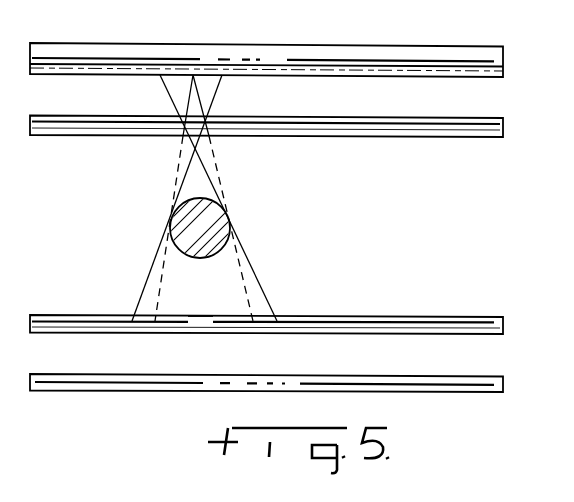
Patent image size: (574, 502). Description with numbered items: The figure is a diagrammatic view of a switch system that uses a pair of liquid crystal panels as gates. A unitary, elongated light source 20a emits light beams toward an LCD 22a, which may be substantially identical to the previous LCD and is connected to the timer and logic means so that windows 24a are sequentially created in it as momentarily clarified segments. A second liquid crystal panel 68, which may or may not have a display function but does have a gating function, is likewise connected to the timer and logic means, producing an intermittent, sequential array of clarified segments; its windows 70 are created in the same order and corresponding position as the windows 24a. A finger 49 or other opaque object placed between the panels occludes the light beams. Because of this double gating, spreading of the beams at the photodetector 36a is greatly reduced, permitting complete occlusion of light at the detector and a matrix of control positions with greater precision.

The light source 20a is at (330, 46).
The LCD 22a is at (362, 133).
The windows 24a is at (208, 113).
The finger 49 is at (227, 211).
The windows 70 is at (201, 321).
The second liquid crystal panel 68 is at (412, 317).
The photodetector 36a is at (153, 391).